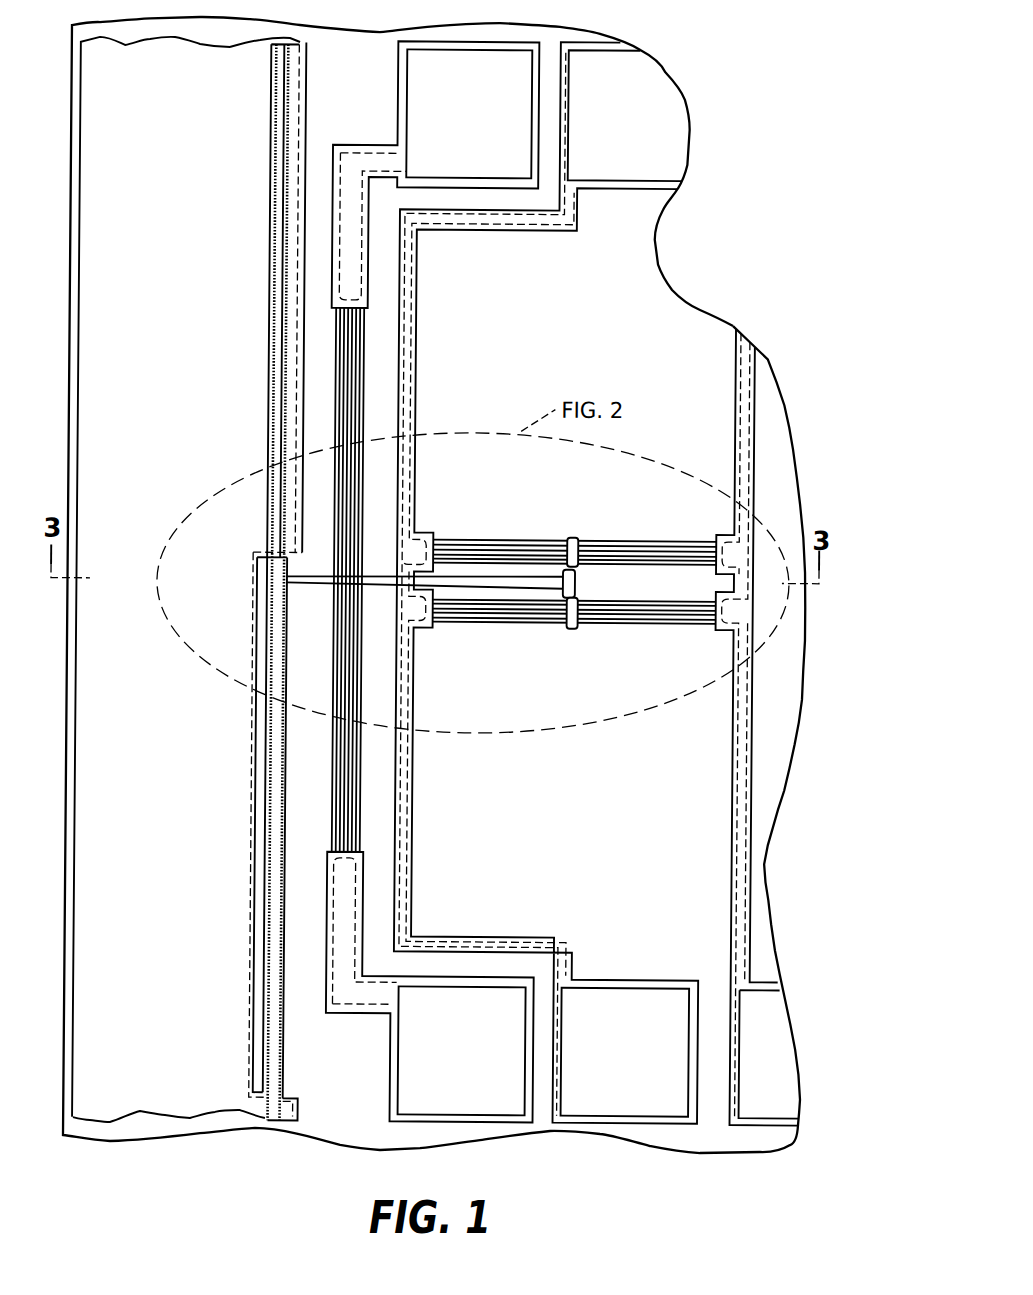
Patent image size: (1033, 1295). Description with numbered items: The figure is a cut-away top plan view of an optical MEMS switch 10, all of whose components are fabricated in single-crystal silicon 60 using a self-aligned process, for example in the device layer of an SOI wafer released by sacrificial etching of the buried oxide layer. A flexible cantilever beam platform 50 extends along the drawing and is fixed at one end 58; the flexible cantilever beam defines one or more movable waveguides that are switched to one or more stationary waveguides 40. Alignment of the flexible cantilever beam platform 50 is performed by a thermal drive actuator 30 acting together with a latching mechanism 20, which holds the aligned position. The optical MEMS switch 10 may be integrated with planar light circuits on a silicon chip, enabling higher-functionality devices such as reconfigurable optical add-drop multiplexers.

The optical MEMS switch 10 is at (735, 91).
The latching mechanism 20 is at (571, 513).
The thermal drive actuator 30 is at (382, 397).
The stationary waveguides 40 is at (191, 453).
The flexible cantilever beam platform 50 is at (300, 750).
The fixed end 58 is at (294, 1101).
The single-crystal silicon 60 is at (674, 290).